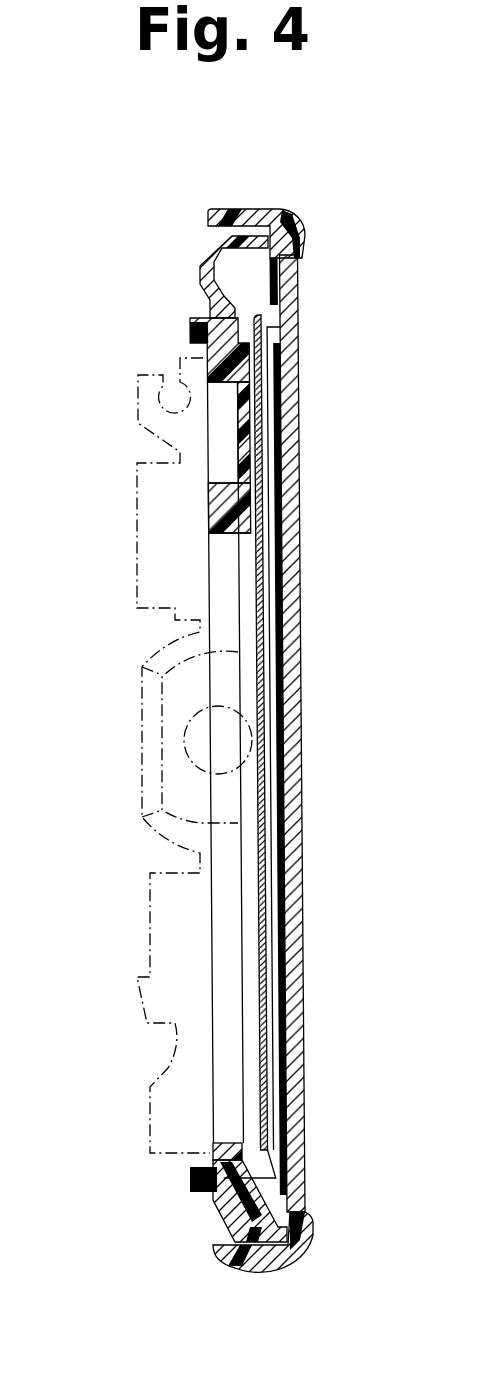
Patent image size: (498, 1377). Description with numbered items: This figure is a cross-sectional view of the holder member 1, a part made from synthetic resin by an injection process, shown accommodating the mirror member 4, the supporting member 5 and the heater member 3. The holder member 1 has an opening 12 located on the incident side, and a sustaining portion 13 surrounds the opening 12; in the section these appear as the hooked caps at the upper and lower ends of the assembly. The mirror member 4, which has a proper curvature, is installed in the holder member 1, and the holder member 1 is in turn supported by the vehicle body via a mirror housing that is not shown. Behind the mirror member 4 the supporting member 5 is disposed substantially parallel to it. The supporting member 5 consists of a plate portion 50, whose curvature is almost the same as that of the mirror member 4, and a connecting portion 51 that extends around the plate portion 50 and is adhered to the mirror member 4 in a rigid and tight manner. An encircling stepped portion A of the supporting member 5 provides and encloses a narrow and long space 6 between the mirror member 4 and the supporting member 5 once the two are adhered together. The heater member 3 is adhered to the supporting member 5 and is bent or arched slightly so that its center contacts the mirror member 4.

The holder member 1 is at (242, 694).
The heater member 3 is at (283, 702).
The mirror member 4 is at (298, 430).
The supporting member 5 is at (260, 530).
The space 6 is at (267, 328).
The opening 12 is at (310, 1218).
The sustaining portion 13 is at (300, 247).
The plate portion 50 is at (260, 892).
The connecting portion 51 is at (267, 273).
The stepped portion A is at (207, 300).